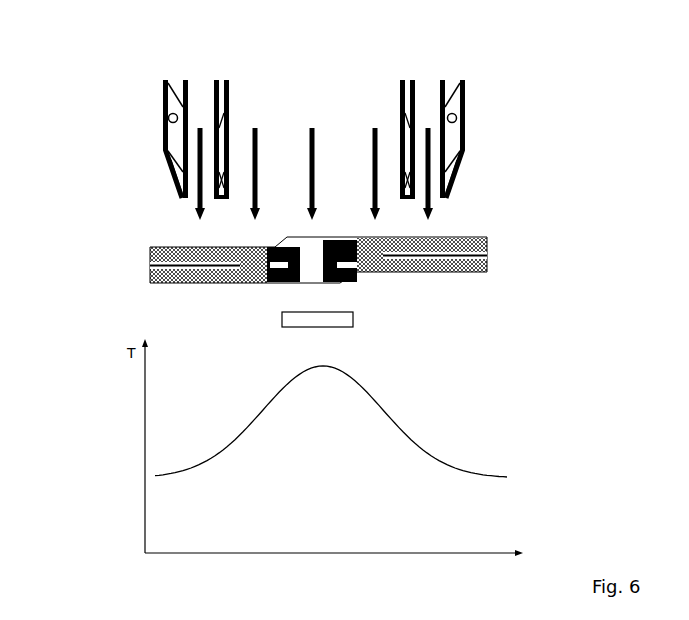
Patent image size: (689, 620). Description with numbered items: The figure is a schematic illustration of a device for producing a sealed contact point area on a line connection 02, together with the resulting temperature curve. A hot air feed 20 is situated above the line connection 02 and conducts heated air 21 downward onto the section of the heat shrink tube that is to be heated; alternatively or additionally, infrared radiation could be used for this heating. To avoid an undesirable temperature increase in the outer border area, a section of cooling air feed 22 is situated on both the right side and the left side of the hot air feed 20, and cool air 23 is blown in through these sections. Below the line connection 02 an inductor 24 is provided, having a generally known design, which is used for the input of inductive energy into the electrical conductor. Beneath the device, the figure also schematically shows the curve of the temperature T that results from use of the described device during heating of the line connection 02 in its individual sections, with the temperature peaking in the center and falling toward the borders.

The line connection 02 is at (122, 254).
The hot air feed 20 is at (228, 78).
The heated air 21 is at (313, 126).
The cooling air feed 22 is at (454, 85).
The cool air 23 is at (433, 213).
The inductor 24 is at (360, 320).